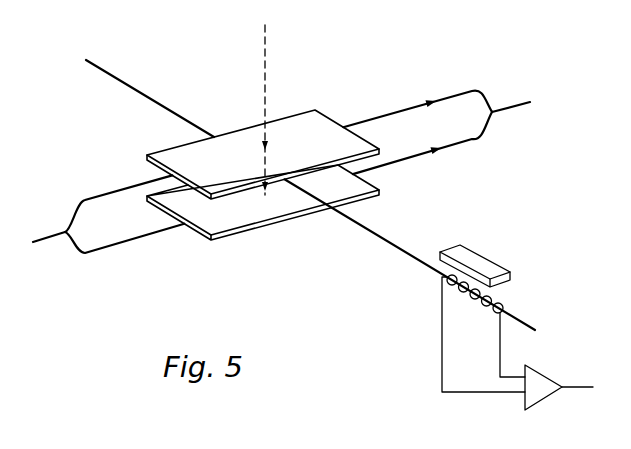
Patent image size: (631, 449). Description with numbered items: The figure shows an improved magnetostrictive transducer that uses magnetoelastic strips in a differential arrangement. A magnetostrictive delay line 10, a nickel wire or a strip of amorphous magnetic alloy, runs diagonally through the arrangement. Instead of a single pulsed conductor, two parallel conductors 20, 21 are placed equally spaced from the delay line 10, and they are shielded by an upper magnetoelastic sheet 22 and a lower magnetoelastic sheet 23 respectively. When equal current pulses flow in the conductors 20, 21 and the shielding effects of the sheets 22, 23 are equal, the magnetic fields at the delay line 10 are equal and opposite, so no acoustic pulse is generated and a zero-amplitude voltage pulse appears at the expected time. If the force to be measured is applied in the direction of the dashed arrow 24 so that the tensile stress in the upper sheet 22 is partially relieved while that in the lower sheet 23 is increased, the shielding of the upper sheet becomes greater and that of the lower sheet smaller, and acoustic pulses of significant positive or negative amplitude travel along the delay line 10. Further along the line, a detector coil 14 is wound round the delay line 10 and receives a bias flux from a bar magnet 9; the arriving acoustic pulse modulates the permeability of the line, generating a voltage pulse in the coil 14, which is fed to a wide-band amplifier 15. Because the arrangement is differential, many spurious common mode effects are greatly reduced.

The magnetostrictive delay line 10 is at (135, 88).
The parallel conductor 20 is at (400, 111).
The parallel conductor 21 is at (413, 158).
The magnetoelastic sheet 22 is at (297, 116).
The magnetoelastic sheet 23 is at (230, 218).
The dashed arrow 24 is at (265, 53).
The bar magnet 9 is at (480, 265).
The detector coil 14 is at (472, 300).
The wide-band amplifier 15 is at (537, 403).